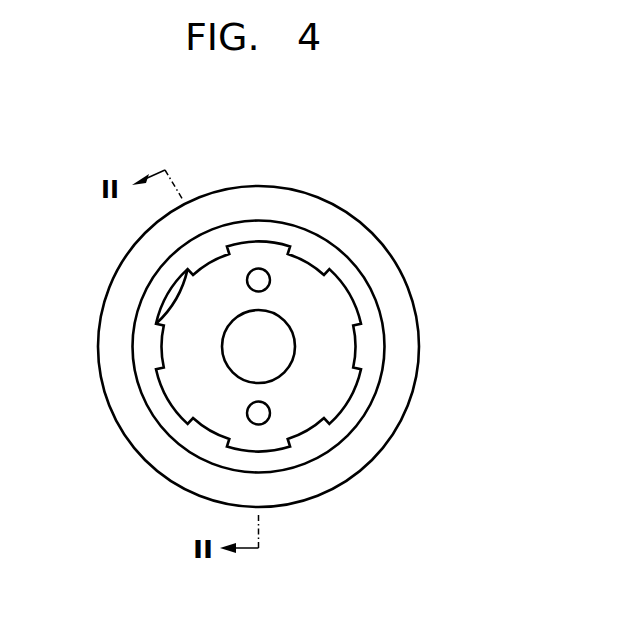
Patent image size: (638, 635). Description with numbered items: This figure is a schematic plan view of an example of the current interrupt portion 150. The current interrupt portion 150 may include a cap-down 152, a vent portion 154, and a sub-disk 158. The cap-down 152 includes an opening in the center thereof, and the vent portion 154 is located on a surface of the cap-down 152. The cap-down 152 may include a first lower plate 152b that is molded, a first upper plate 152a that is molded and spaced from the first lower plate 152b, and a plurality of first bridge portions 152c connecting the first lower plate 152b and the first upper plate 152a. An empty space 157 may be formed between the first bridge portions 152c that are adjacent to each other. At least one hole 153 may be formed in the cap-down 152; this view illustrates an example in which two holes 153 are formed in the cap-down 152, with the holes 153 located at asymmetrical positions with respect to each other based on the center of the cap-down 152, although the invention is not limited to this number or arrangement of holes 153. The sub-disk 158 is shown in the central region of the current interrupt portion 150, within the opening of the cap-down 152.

The current interrupt portion 150 is at (422, 174).
The cap-down 152 is at (344, 347).
The first upper plate 152a is at (398, 318).
The first lower plate 152b is at (327, 358).
The first bridge portions 152c is at (346, 303).
The hole 153 is at (258, 417).
The vent portion 154 is at (397, 388).
The empty space 157 is at (168, 256).
The sub-disk 158 is at (275, 353).